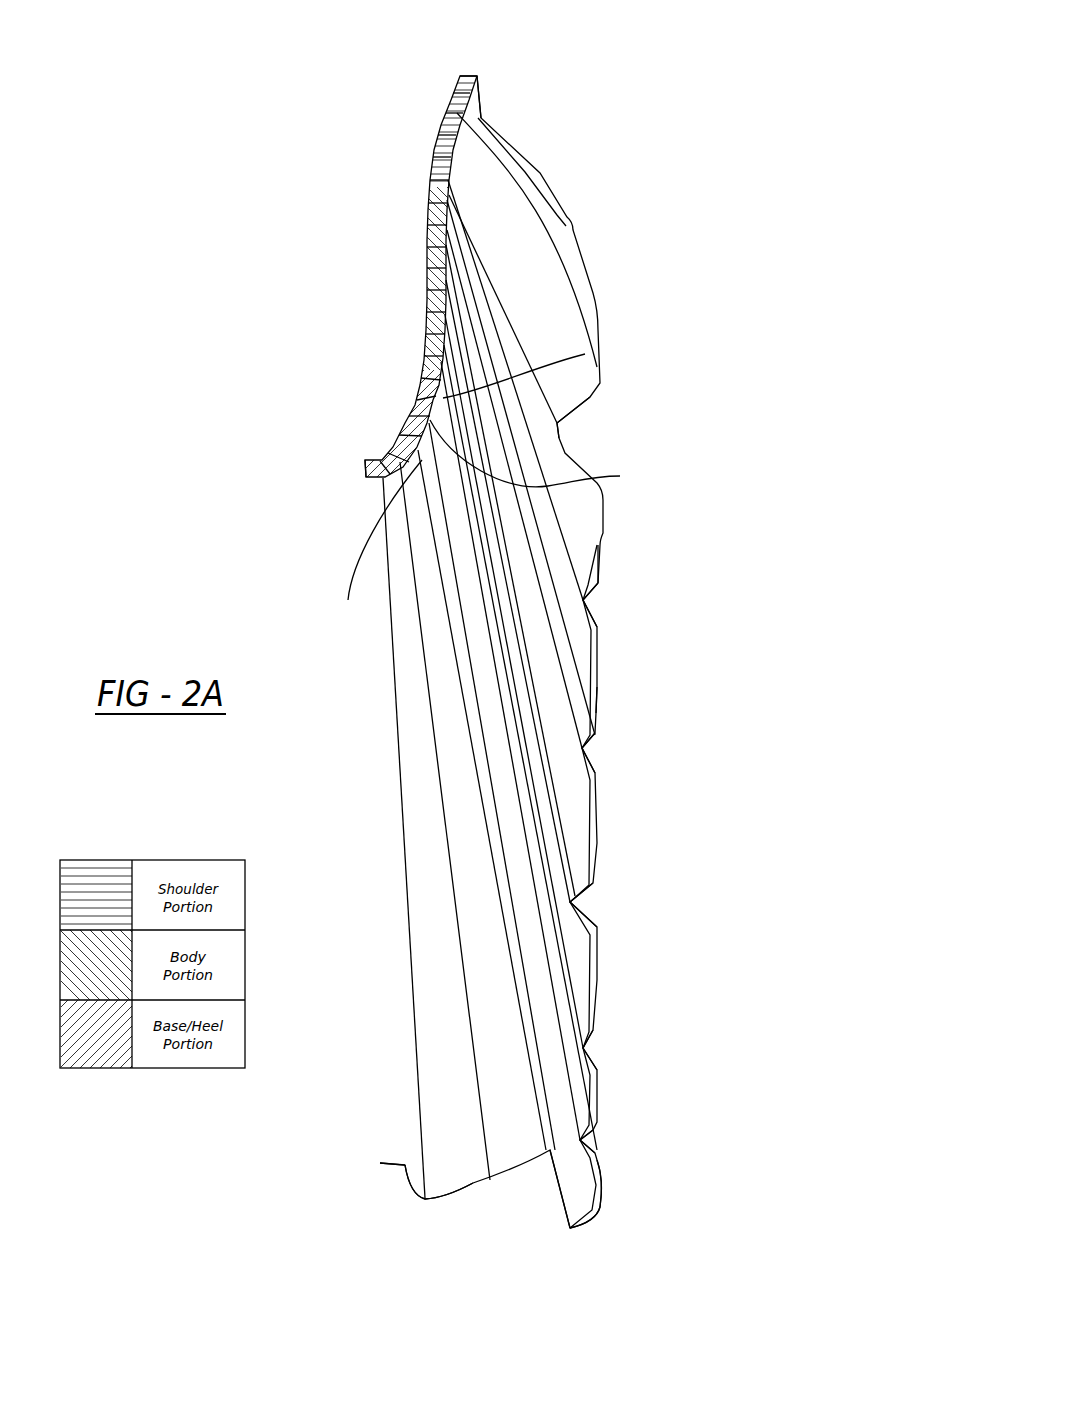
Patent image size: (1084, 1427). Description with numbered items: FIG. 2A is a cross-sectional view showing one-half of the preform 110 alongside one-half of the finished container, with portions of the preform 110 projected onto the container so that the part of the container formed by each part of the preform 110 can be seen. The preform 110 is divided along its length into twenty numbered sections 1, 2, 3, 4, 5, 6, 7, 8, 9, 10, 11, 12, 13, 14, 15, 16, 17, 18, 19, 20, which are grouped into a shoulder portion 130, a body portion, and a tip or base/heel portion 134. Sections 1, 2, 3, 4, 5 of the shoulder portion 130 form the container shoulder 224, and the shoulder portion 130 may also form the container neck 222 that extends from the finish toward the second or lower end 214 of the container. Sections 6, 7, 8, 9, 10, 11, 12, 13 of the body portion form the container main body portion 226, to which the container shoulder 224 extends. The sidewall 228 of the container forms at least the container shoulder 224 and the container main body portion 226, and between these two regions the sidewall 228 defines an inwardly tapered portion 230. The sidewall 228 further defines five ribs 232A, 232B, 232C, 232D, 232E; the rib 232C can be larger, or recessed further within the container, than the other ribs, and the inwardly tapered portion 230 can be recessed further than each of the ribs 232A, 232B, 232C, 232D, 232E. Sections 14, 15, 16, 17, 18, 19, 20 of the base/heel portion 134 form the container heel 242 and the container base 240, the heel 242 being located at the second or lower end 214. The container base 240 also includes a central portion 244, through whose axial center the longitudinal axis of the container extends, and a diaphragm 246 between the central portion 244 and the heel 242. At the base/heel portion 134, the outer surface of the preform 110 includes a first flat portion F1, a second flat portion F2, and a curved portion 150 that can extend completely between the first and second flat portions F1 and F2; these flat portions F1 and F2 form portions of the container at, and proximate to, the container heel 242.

The preform 110 is at (203, 180).
The shoulder portion 130 is at (470, 78).
The base/heel portion 134 is at (366, 478).
The curved portion 150 is at (620, 476).
The second or lower end 214 is at (584, 1222).
The container neck 222 is at (481, 80).
The container shoulder 224 is at (523, 167).
The container main body portion 226 is at (598, 553).
The sidewall 228 is at (598, 713).
The inwardly tapered portion 230 is at (559, 436).
The rib 232A is at (585, 602).
The rib 232B is at (585, 750).
The rib 232C is at (574, 904).
The rib 232D is at (586, 1050).
The rib 232E is at (584, 1142).
The container base 240 is at (420, 1208).
The container heel 242 is at (563, 1228).
The central portion 244 is at (380, 1163).
The diaphragm 246 is at (463, 1197).
The first flat portion F1 is at (585, 354).
The second flat portion F2 is at (378, 546).
The section 1 is at (460, 78).
The section 2 is at (447, 93).
The section 3 is at (435, 115).
The section 4 is at (430, 137).
The section 5 is at (424, 163).
The section 6 is at (427, 187).
The section 7 is at (426, 210).
The section 8 is at (424, 233).
The section 9 is at (424, 257).
The section 10 is at (424, 277).
The section 11 is at (423, 300).
The section 12 is at (421, 322).
The section 13 is at (421, 343).
The section 14 is at (418, 367).
The section 15 is at (413, 387).
The section 16 is at (406, 400).
The section 17 is at (398, 418).
The section 18 is at (388, 435).
The section 19 is at (378, 450).
The section 20 is at (358, 470).